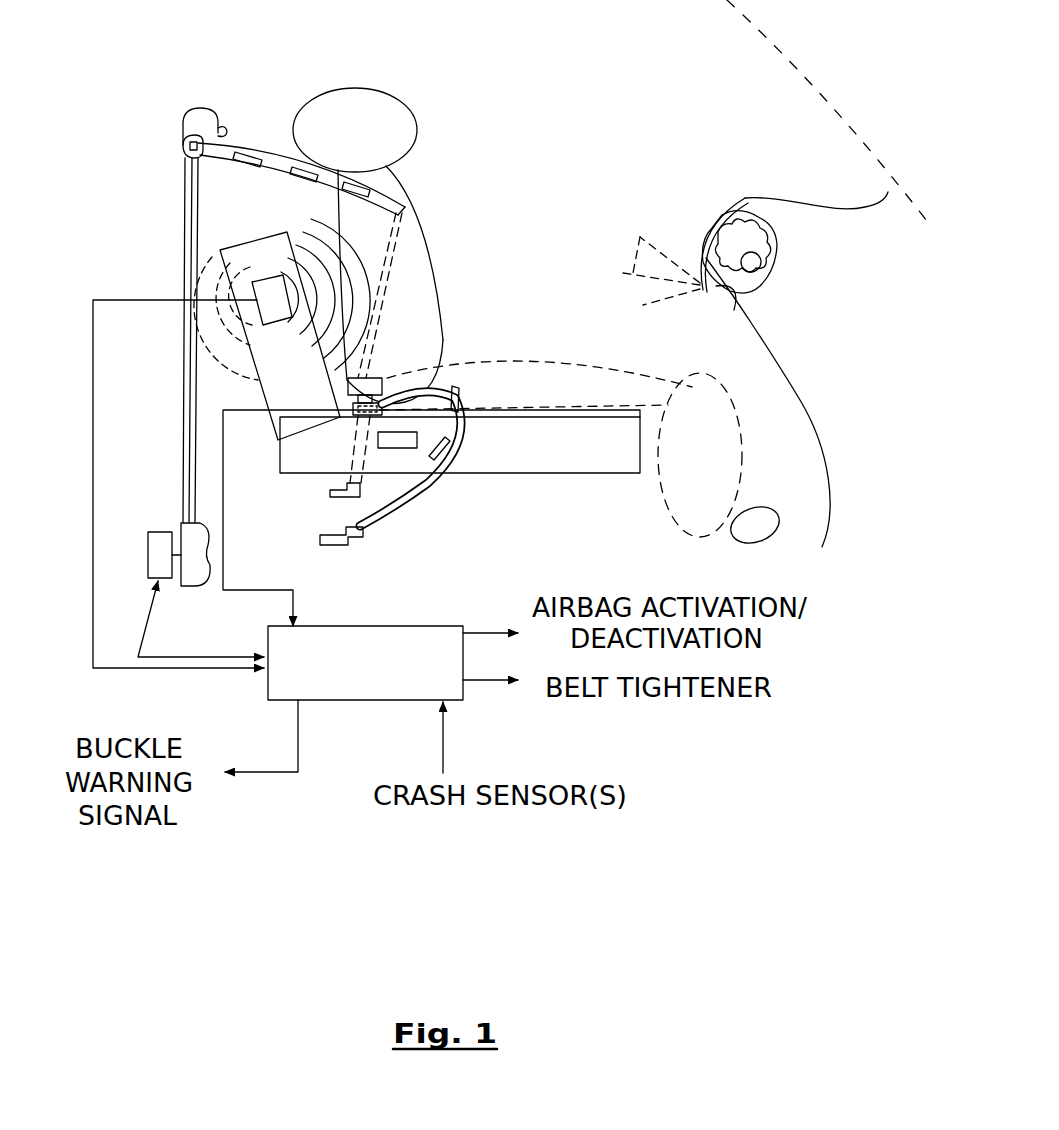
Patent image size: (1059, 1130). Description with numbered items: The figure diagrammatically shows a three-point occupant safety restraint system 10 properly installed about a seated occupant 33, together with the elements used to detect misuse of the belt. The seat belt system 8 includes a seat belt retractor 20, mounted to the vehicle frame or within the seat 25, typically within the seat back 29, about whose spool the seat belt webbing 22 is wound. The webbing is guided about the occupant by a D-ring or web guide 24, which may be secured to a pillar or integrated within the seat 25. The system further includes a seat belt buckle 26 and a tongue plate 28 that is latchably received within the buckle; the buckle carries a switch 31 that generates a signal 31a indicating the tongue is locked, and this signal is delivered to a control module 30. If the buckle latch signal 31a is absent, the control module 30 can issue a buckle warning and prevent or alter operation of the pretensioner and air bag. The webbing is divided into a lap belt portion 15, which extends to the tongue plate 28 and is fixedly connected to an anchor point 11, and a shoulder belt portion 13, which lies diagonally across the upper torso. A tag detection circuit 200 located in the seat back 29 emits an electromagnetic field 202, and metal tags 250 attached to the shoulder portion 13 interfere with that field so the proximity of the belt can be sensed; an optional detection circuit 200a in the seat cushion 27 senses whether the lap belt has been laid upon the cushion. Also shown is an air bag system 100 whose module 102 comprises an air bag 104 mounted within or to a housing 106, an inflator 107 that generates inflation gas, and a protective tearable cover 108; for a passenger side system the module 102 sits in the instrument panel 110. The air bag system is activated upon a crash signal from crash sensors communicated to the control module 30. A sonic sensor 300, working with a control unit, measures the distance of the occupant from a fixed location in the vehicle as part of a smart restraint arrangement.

The three-point occupant safety restraint system 10 is at (376, 43).
The shoulder belt portion 13 is at (260, 140).
The D-ring or web guide 24 is at (172, 136).
The seat belt webbing 22 is at (180, 376).
The seat belt retractor 20 is at (190, 578).
The occupant 33 is at (423, 135).
The tongue plate 28 is at (425, 360).
The seat belt system 8 is at (407, 212).
The metal tags 250 is at (292, 168).
The buckle switch 31 is at (350, 377).
The seat belt buckle 26 is at (352, 414).
The lap belt portion 15 is at (407, 490).
The anchor point 11 is at (338, 546).
The seat cushion 27 is at (577, 477).
The seat 25 is at (297, 485).
The optional detection circuit 200a is at (400, 440).
The seat back 29 is at (237, 233).
The tag detection circuit 200 is at (280, 327).
The electromagnetic field 202 is at (307, 230).
The buckle latch signal 31a is at (268, 590).
The control module 30 is at (265, 640).
The instrument panel 110 is at (757, 337).
The air bag system 100 is at (652, 205).
The housing 106 is at (778, 246).
The protective tearable cover 108 is at (712, 228).
The air bag module 102 is at (860, 150).
The air bag 104 is at (752, 230).
The inflator 107 is at (757, 264).
The sonic sensor 300 is at (718, 293).